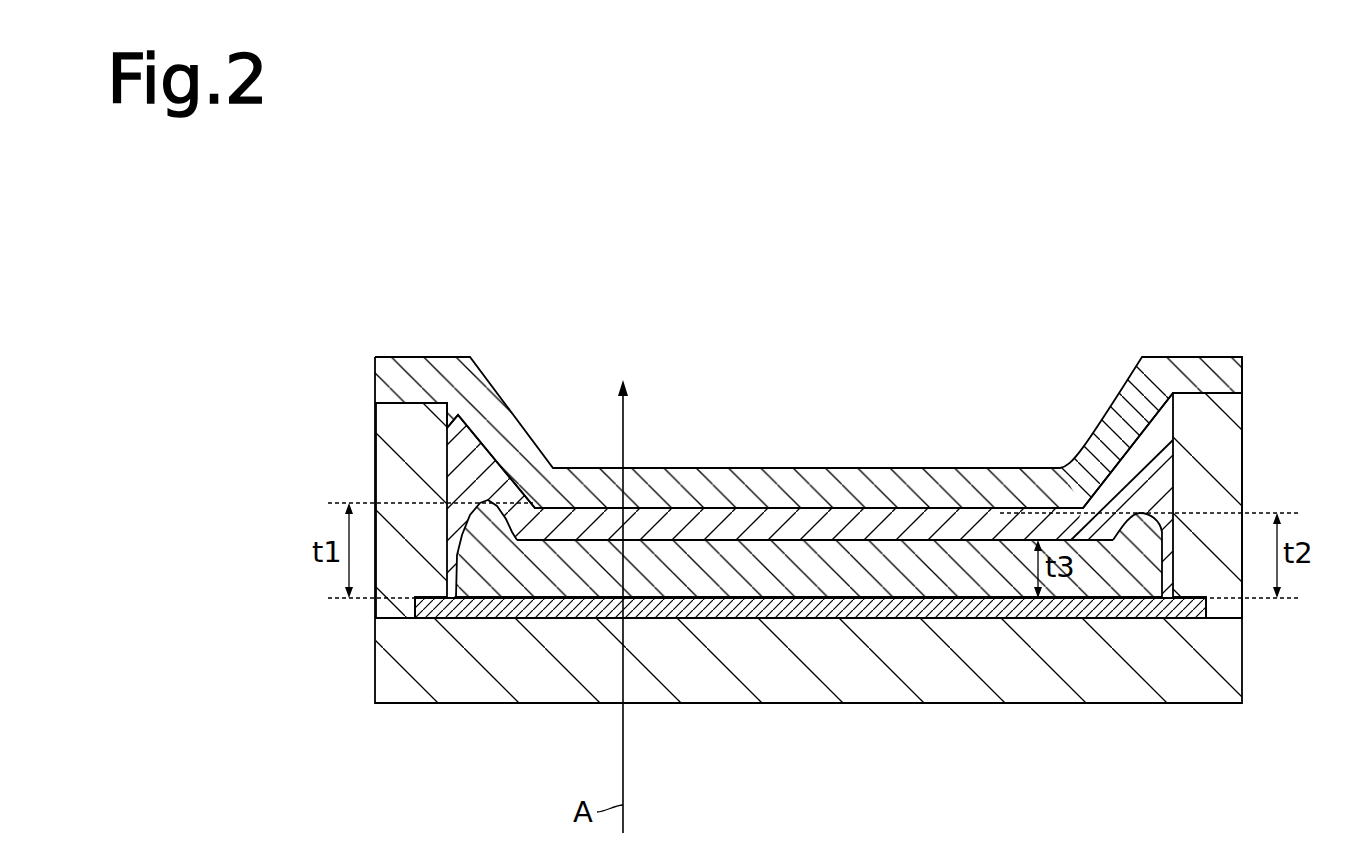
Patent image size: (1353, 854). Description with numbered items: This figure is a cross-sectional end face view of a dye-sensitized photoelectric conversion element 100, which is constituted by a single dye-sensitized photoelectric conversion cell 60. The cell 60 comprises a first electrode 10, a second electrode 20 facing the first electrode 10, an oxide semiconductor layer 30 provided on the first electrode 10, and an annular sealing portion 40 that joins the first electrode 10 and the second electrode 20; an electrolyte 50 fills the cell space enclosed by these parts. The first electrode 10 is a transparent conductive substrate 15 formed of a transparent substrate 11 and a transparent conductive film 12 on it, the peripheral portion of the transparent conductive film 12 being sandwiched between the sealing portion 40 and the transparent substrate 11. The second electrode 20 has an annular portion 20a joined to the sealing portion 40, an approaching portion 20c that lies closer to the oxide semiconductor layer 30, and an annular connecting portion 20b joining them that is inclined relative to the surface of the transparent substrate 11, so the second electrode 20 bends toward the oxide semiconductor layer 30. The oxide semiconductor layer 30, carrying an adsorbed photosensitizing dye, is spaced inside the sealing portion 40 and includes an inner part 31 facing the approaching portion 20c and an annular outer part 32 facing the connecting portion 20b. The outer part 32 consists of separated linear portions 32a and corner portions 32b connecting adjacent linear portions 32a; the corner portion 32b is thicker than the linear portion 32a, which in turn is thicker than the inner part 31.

The dye-sensitized photoelectric conversion element 100 is at (485, 205).
The first electrode 10 is at (809, 725).
The transparent conductive substrate 15 is at (795, 803).
The transparent substrate 11 is at (717, 682).
The transparent conductive film 12 is at (766, 612).
The second electrode 20 is at (1158, 273).
The annular portion 20a is at (1187, 372).
The connecting portion 20b is at (1117, 433).
The approaching portion 20c is at (1012, 483).
The oxide semiconductor layer 30 is at (985, 607).
The inner part 31 is at (903, 578).
The outer part 32 is at (807, 658).
The linear portion 32a is at (1140, 557).
The corner portion 32b is at (487, 527).
The sealing portion 40 is at (402, 425).
The electrolyte 50 is at (683, 525).
The dye-sensitized photoelectric conversion cell 60 is at (1228, 357).